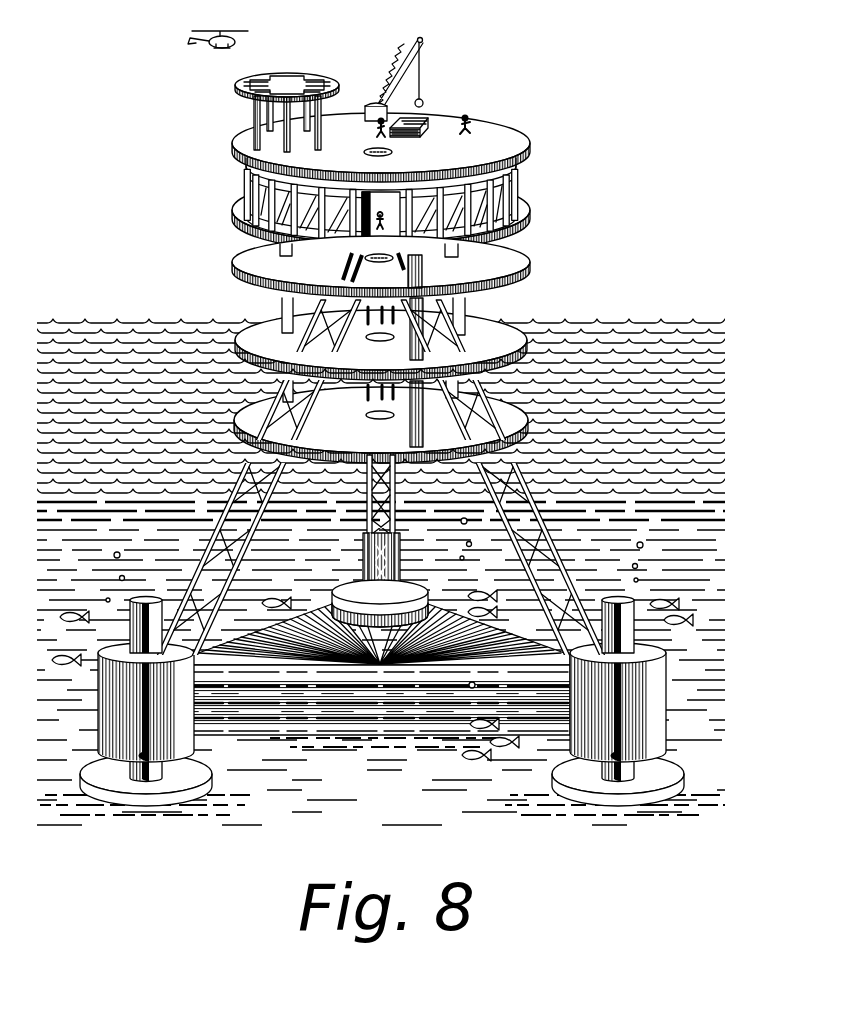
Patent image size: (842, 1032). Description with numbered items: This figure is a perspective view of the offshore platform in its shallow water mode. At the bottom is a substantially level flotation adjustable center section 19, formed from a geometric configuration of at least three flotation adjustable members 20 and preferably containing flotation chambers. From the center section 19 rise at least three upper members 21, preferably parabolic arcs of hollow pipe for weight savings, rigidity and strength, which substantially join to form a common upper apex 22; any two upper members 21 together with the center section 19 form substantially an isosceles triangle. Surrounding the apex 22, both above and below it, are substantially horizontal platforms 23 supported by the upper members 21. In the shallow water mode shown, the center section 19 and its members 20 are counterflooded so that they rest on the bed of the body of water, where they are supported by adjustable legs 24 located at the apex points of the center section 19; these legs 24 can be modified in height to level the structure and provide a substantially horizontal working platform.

The flotation adjustable center section 19 is at (282, 648).
The flotation adjustable member 20 is at (112, 729).
The upper member 21 is at (569, 559).
The upper apex 22 is at (376, 263).
The horizontal platform 23 is at (508, 258).
The adjustable leg 24 is at (652, 773).